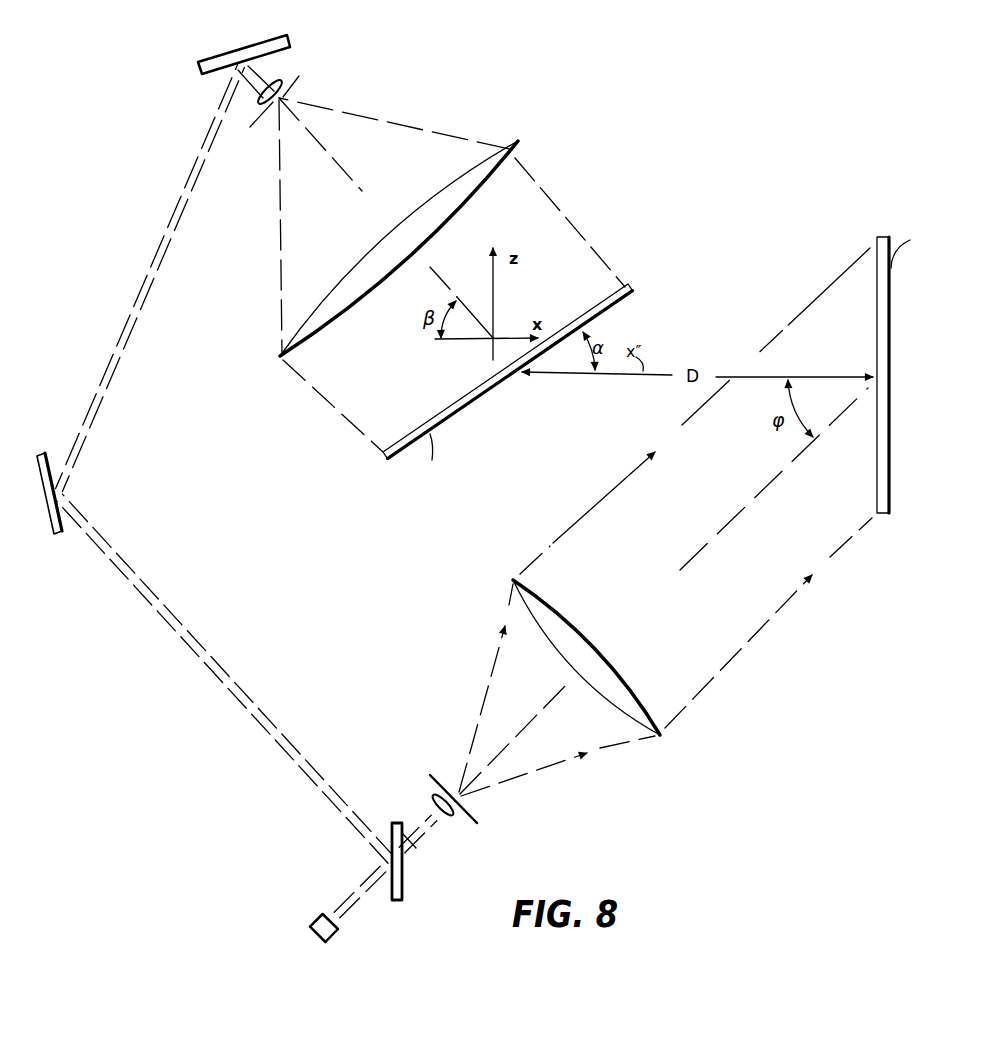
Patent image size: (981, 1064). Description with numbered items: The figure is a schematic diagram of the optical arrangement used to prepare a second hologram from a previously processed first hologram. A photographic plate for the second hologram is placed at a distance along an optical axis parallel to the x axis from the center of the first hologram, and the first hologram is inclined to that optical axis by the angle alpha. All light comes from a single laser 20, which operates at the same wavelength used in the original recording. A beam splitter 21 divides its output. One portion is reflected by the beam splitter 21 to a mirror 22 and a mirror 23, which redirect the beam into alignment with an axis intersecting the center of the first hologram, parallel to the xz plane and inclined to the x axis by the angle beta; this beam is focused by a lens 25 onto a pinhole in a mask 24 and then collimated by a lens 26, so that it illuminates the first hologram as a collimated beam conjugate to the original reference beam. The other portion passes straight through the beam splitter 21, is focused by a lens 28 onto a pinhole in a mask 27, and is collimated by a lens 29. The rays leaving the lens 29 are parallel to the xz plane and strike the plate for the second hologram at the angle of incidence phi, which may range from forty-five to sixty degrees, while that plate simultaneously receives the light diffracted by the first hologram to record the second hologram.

The laser 20 is at (333, 934).
The beam splitter 21 is at (403, 868).
The mirror 22 is at (50, 528).
The mirror 23 is at (213, 60).
The mask 24 is at (283, 96).
The lens 25 is at (284, 82).
The lens 26 is at (522, 143).
The mask 27 is at (478, 822).
The lens 28 is at (446, 820).
The lens 29 is at (645, 703).